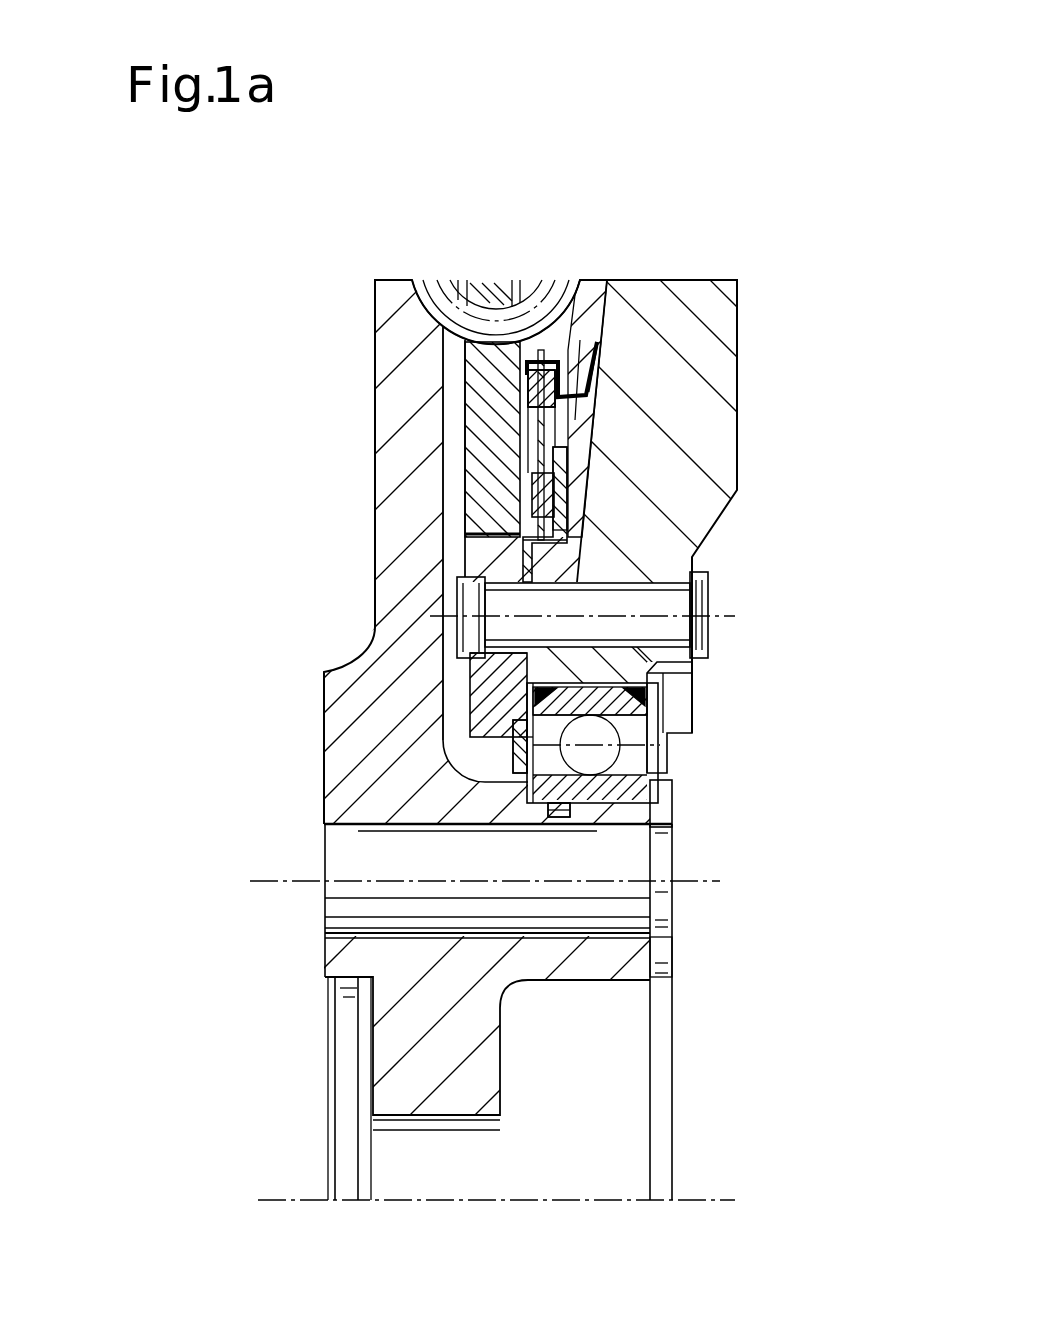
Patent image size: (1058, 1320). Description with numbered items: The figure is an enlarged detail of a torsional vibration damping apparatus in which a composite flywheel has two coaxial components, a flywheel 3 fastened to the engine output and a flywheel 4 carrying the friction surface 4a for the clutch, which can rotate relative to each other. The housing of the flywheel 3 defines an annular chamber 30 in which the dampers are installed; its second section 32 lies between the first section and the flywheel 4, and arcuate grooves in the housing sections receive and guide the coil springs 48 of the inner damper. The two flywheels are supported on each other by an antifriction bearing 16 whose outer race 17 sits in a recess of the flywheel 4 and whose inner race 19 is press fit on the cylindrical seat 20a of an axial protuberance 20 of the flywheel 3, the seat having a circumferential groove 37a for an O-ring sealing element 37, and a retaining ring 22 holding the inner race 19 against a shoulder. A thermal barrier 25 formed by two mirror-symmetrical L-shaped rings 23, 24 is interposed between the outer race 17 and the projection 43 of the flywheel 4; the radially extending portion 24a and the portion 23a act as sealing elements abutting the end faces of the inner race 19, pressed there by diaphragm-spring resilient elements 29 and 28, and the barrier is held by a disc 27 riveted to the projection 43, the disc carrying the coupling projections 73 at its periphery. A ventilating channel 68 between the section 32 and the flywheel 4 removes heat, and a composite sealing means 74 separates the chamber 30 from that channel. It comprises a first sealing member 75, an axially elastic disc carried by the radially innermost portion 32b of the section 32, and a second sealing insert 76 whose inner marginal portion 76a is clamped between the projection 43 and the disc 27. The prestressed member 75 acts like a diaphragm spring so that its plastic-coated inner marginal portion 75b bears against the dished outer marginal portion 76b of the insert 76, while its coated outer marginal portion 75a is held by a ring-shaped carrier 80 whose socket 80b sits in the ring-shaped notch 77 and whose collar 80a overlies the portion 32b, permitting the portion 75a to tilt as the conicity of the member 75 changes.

The flywheel 3 is at (400, 408).
The flywheel 4 is at (685, 373).
The friction surface 4a is at (685, 287).
The antifriction bearing 16 is at (542, 797).
The outer race 17 is at (667, 695).
The inner race 19 is at (542, 797).
The axial protuberance 20 is at (597, 956).
The cylindrical seat 20a is at (670, 833).
The retaining ring 22 is at (660, 944).
The ring 23 is at (520, 720).
The radially inwardly extending portion 23a is at (520, 720).
The ring 24 is at (665, 747).
The radially extending portion 24a is at (665, 747).
The thermal barrier 25 is at (697, 728).
The disc-shaped member 27 is at (524, 668).
The resilient element 28 is at (532, 738).
The resilient element 29 is at (667, 755).
The annular chamber 30 is at (450, 450).
The second section 32 is at (590, 287).
The radially innermost portion 32b is at (570, 375).
The sealing element 37 is at (540, 838).
The circumferential groove 37a is at (520, 832).
The projection 43 is at (625, 597).
The coil springs 48 is at (437, 287).
The ventilating channel 68 is at (608, 353).
The projections 73 is at (530, 575).
The composite sealing means 74 is at (530, 455).
The first sealing member 75 is at (545, 436).
The outer marginal portion 75a is at (528, 373).
The inner marginal portion 75b is at (517, 523).
The second sealing member 76 is at (556, 528).
The inner marginal portion 76a is at (495, 680).
The dished outer marginal portion 76b is at (565, 482).
The ring-shaped notch 77 is at (500, 316).
The ring-shaped carrier 80 is at (532, 292).
The collar 80a is at (592, 380).
The socket 80b is at (532, 292).